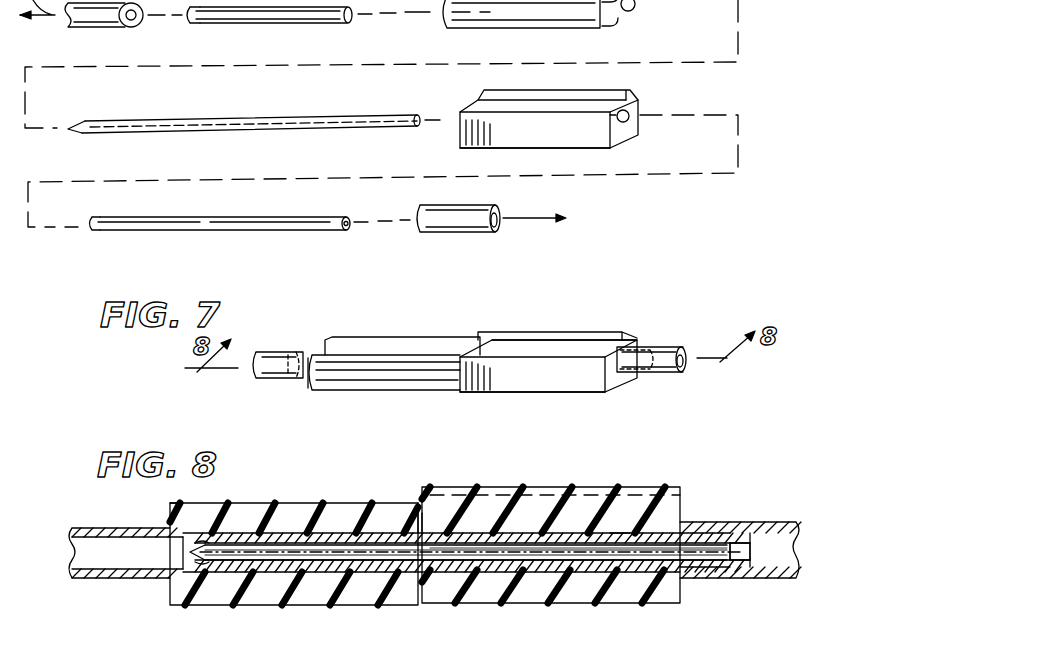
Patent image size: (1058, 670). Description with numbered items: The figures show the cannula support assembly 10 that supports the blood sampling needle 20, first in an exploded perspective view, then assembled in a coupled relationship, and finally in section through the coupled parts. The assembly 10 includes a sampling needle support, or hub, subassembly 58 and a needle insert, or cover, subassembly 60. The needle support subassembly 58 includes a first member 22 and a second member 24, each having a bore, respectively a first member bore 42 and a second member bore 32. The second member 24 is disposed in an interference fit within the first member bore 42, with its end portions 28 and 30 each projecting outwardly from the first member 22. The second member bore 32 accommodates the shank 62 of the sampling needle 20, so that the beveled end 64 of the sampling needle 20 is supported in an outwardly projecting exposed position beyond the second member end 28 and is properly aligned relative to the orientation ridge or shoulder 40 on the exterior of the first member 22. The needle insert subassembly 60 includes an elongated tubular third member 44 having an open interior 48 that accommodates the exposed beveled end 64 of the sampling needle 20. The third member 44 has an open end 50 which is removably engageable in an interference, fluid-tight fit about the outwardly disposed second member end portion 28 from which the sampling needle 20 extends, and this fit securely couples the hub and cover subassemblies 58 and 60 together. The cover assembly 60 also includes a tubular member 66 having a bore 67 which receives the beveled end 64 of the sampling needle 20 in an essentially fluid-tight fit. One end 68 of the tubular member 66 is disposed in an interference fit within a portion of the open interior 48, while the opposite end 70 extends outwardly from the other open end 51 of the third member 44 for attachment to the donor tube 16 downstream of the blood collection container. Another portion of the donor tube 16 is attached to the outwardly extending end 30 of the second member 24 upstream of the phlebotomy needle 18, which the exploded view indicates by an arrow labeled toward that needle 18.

In FIG. 7, the assembly 10 is at (608, 326).
In FIG. 8, the assembly 10 is at (578, 470).
In FIG. 6, the donor tube 16 is at (100, 28).
In FIG. 7, the donor tube 16 is at (258, 379).
In FIG. 8, the donor tube 16 is at (97, 580).
In FIG. 6, the phlebotomy needle 18 is at (625, 215).
In FIG. 6, the blood sampling needle 20 is at (233, 119).
In FIG. 8, the blood sampling needle 20 is at (367, 561).
In FIG. 6, the first member 22 is at (545, 141).
In FIG. 7, the first member 22 is at (572, 393).
In FIG. 8, the first member 22 is at (537, 593).
In FIG. 6, the second member 24 is at (256, 231).
In FIG. 8, the second member 24 is at (681, 500).
In FIG. 6, the second member end portion 28 is at (95, 231).
In FIG. 8, the second member end portion 28 is at (404, 566).
In FIG. 6, the second member end portion 30 is at (346, 217).
In FIG. 7, the second member end portion 30 is at (643, 350).
In FIG. 8, the second member end portion 30 is at (736, 567).
In FIG. 6, the second member bore 32 is at (348, 230).
In FIG. 8, the second member bore 32 is at (690, 540).
In FIG. 6, the ridge or shoulder 40 is at (590, 100).
In FIG. 7, the ridge or shoulder 40 is at (572, 341).
In FIG. 6, the first member bore 42 is at (649, 102).
In FIG. 8, the first member bore 42 is at (621, 535).
In FIG. 7, the third member 44 is at (394, 379).
In FIG. 8, the third member 44 is at (272, 590).
In FIG. 6, the open interior 48 is at (617, 10).
In FIG. 8, the open interior 48 is at (235, 570).
In FIG. 8, the open end 50 is at (426, 535).
In FIG. 7, the open end 51 is at (321, 345).
In FIG. 8, the open end 51 is at (171, 530).
In FIG. 6, the sampling needle support subassembly 58 is at (510, 82).
In FIG. 7, the sampling needle support subassembly 58 is at (533, 400).
In FIG. 8, the sampling needle support subassembly 58 is at (610, 616).
In FIG. 7, the needle insert subassembly 60 is at (434, 326).
In FIG. 8, the needle insert subassembly 60 is at (345, 497).
In FIG. 6, the shank 62 is at (366, 117).
In FIG. 8, the shank 62 is at (492, 561).
In FIG. 6, the beveled end 64 is at (80, 133).
In FIG. 8, the beveled end 64 is at (200, 554).
In FIG. 8, the tubular member 66 is at (268, 540).
In FIG. 8, the bore 67 is at (208, 545).
In FIG. 6, the end of tubular member 68 is at (295, 22).
In FIG. 8, the end of tubular member 68 is at (337, 568).
In FIG. 6, the opposite end of tubular member 70 is at (192, 26).
In FIG. 7, the opposite end of tubular member 70 is at (301, 381).
In FIG. 8, the opposite end of tubular member 70 is at (152, 573).